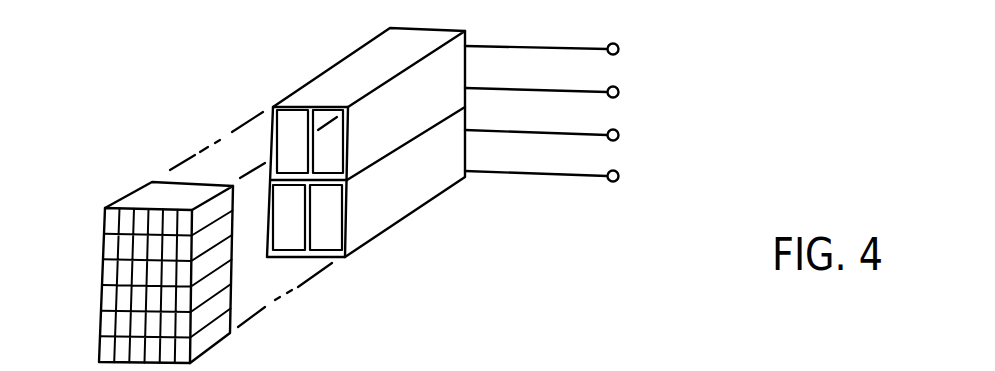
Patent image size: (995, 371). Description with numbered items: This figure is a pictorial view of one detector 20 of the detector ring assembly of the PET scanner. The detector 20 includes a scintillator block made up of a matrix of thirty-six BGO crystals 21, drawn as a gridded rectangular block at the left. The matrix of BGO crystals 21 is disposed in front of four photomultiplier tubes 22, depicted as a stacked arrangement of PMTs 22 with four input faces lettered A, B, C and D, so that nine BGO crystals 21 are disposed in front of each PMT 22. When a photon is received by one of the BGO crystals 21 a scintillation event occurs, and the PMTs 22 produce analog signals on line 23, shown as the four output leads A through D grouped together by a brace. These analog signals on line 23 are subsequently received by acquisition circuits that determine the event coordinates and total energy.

The detector 20 is at (286, 68).
The BGO crystal 21 is at (97, 228).
The photomultiplier tube 22 is at (408, 122).
The line 23 is at (645, 0).